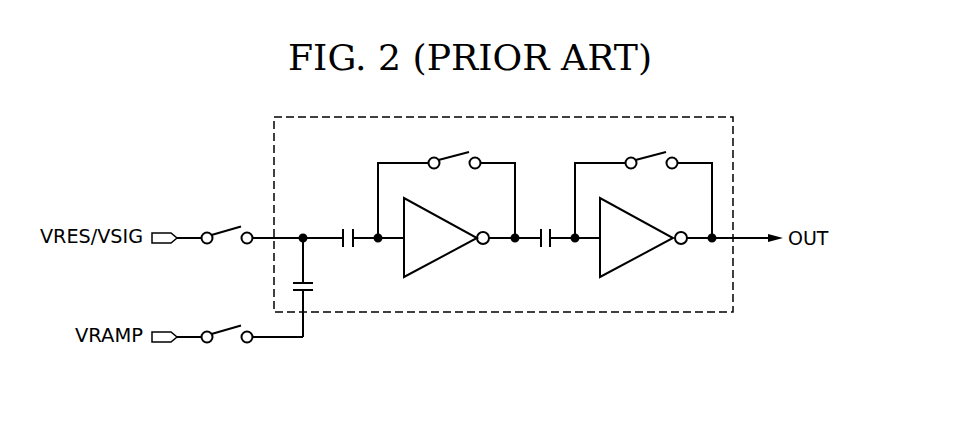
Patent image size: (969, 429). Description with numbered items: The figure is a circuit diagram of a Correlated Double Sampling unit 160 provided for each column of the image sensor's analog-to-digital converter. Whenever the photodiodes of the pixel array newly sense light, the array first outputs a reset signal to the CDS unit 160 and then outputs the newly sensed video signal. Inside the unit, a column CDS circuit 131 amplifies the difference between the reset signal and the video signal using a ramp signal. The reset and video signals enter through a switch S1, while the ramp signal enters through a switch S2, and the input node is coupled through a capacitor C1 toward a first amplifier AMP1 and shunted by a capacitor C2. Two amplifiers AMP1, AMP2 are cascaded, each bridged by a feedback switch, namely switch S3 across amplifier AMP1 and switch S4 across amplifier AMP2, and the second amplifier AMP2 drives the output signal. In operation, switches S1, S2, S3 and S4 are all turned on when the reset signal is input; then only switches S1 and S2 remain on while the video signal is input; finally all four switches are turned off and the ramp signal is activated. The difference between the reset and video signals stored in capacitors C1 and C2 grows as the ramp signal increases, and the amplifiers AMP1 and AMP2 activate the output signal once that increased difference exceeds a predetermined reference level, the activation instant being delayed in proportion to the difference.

The correlated double sampling unit 160 is at (762, 110).
The column CDS circuit 131 is at (527, 312).
The switch S1 is at (227, 223).
The switch S2 is at (227, 323).
The switch S3 is at (446, 184).
The switch S4 is at (643, 184).
The capacitor C1 is at (350, 226).
The capacitor C2 is at (319, 287).
The amplifier AMP1 is at (446, 237).
The amplifier AMP2 is at (643, 237).